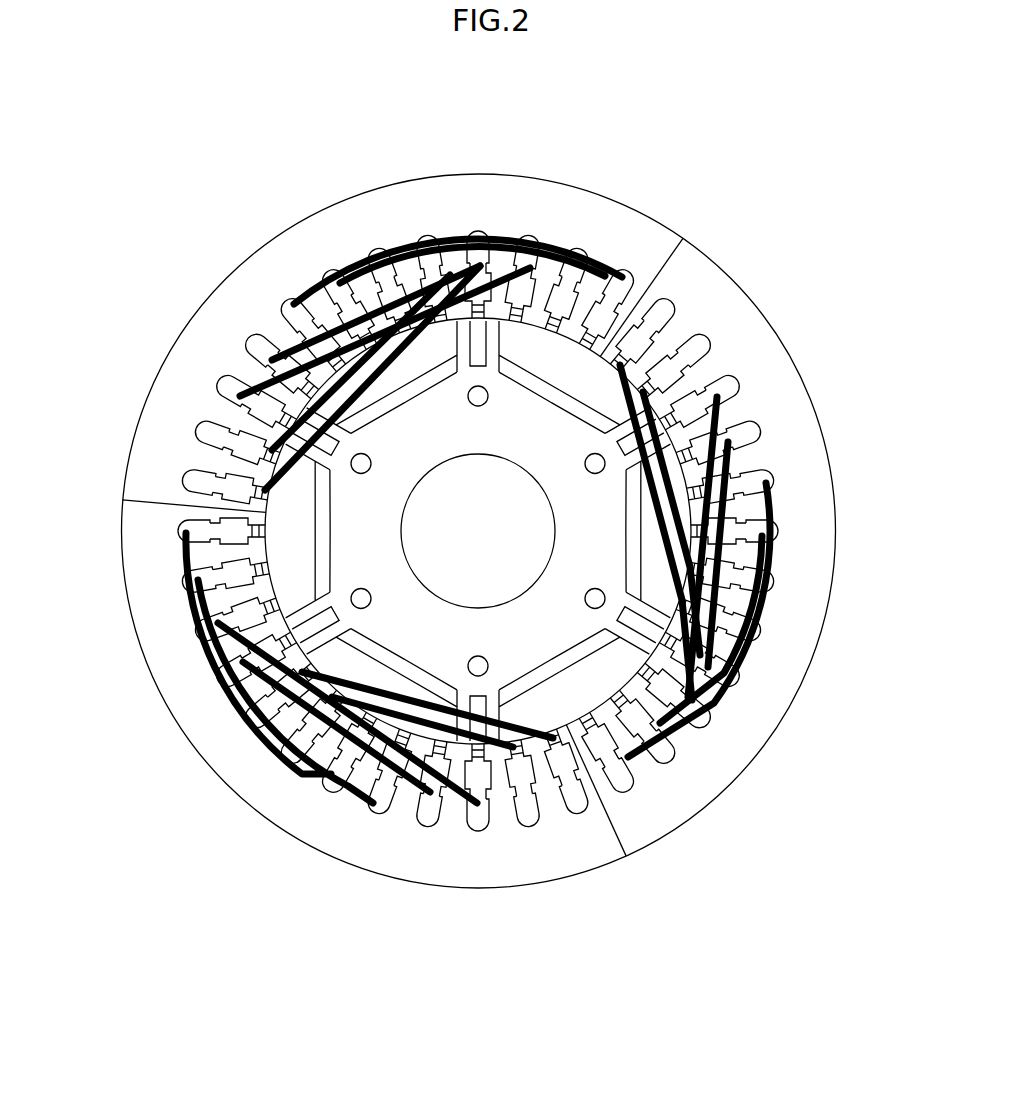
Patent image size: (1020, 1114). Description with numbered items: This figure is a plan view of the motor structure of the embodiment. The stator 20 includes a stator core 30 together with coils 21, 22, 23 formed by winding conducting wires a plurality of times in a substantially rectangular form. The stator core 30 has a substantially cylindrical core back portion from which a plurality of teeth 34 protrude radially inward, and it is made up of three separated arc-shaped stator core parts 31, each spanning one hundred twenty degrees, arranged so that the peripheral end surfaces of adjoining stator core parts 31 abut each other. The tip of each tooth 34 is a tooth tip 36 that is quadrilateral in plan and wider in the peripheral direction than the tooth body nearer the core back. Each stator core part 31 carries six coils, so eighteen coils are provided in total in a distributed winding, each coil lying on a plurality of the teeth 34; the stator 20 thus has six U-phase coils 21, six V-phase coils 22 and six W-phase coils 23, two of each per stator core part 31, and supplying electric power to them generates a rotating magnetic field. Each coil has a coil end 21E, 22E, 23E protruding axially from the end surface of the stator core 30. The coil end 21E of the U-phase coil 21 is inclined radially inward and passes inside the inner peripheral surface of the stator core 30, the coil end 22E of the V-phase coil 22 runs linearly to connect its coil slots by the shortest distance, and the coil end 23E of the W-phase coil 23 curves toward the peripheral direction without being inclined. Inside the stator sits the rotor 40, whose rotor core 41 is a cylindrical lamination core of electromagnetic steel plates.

The stator 20 is at (557, 187).
The stator core 30 is at (478, 531).
The stator core part 31 is at (366, 190).
The U-phase coil 21 is at (700, 362).
The coil end of U-phase coil 21E is at (392, 368).
The V-phase coil 22 is at (240, 396).
The coil end of V-phase coil 22E is at (340, 284).
The W-phase coil 23 is at (621, 265).
The coil end of W-phase coil 23E is at (535, 238).
The tooth 34 is at (212, 550).
The tooth tip 36 is at (253, 548).
The rotor 40 is at (478, 531).
The rotor core 41 is at (511, 497).